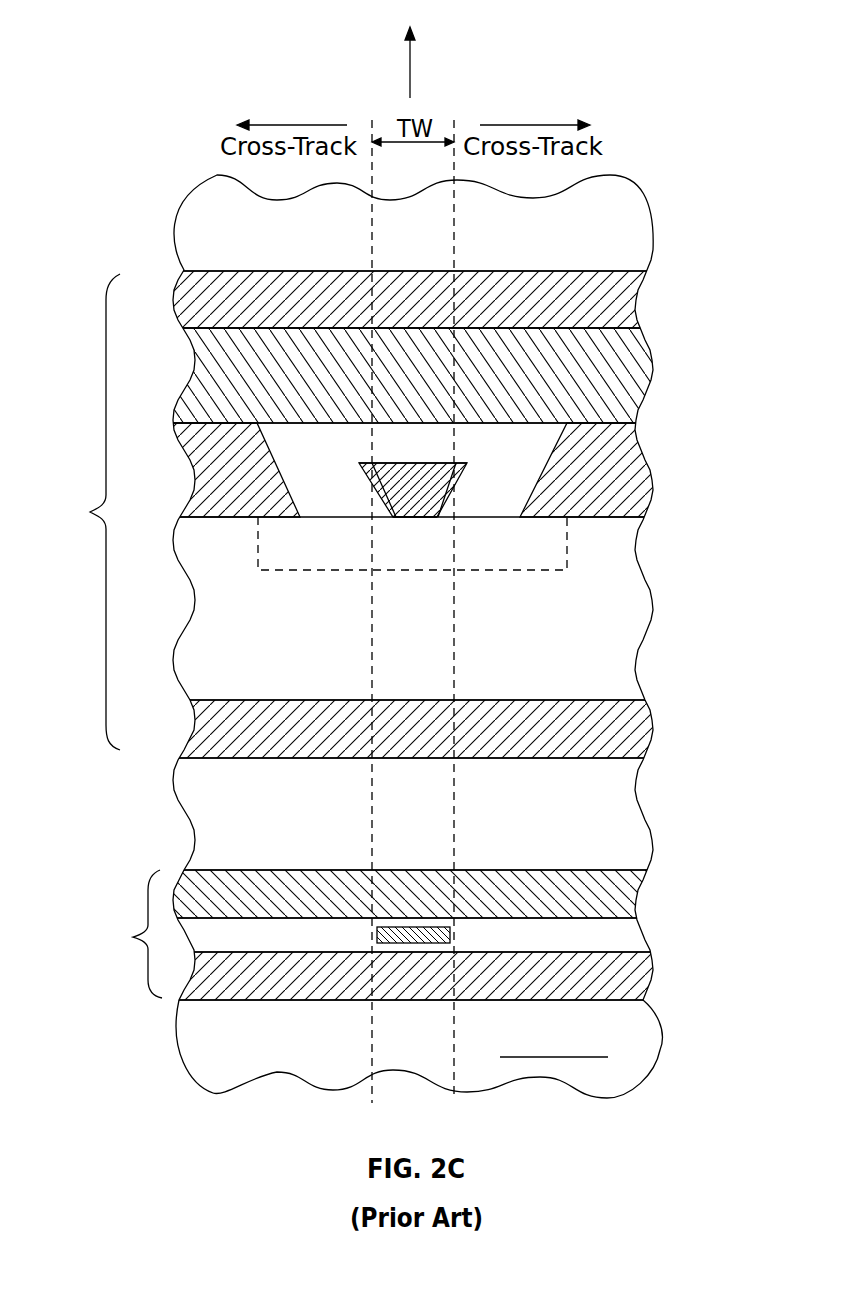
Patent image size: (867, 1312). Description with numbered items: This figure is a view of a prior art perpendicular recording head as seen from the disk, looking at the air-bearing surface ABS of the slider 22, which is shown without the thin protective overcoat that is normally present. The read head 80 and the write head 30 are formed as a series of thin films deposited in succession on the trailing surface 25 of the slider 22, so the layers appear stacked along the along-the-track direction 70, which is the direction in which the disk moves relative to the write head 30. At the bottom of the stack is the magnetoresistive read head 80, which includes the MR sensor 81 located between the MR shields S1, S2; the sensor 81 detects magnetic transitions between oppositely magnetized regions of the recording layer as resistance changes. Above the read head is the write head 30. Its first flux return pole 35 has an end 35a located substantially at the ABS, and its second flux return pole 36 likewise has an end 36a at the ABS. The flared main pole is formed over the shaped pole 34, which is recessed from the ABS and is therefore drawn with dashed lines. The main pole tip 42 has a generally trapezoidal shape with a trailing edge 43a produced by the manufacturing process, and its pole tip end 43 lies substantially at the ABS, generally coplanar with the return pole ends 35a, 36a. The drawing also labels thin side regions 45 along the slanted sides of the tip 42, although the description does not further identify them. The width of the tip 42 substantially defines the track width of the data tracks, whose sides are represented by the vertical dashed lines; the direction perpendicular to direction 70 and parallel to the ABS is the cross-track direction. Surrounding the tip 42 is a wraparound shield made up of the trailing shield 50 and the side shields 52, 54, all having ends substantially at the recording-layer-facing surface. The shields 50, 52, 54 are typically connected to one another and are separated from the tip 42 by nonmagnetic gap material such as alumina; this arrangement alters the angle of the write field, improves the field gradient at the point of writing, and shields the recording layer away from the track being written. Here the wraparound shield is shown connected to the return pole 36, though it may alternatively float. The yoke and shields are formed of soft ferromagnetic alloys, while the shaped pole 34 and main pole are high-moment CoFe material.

The slider 22 is at (215, 1093).
The trailing surface 25 is at (520, 985).
The write head 30 is at (89, 512).
The shaped pole 34 is at (510, 570).
The first flux return pole 35 is at (650, 752).
The end of first return pole 35a is at (642, 707).
The second flux return pole 36 is at (638, 325).
The end of second return pole 36a is at (633, 300).
The pole tip portion 42 is at (420, 518).
The pole tip end 43 is at (417, 463).
The trailing edge 43a is at (442, 463).
The sensor sidewall layers 45 is at (377, 503).
The trailing shield 50 is at (653, 382).
The side shield 52 is at (647, 468).
The side shield 54 is at (197, 472).
The along-the-track direction 70 is at (413, 78).
The magnetoresistive read head 80 is at (131, 934).
The MR sensor 81 is at (407, 927).
The air-bearing surface ABS is at (653, 610).
The MR shield S1 is at (648, 975).
The MR shield S2 is at (635, 897).